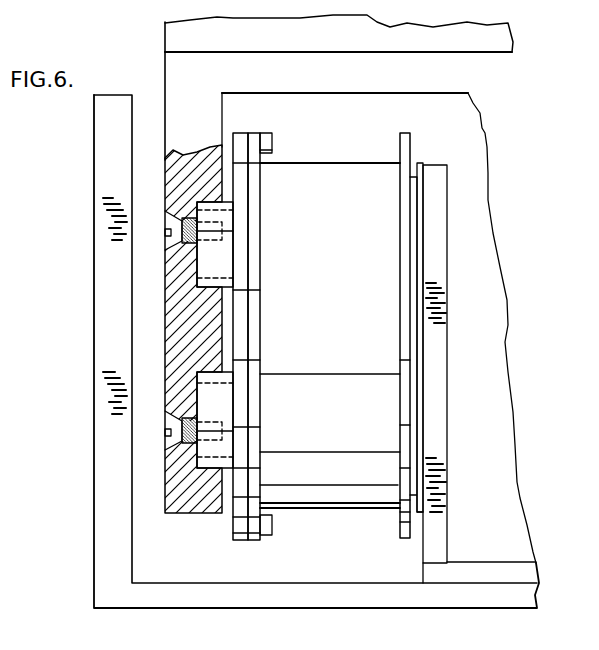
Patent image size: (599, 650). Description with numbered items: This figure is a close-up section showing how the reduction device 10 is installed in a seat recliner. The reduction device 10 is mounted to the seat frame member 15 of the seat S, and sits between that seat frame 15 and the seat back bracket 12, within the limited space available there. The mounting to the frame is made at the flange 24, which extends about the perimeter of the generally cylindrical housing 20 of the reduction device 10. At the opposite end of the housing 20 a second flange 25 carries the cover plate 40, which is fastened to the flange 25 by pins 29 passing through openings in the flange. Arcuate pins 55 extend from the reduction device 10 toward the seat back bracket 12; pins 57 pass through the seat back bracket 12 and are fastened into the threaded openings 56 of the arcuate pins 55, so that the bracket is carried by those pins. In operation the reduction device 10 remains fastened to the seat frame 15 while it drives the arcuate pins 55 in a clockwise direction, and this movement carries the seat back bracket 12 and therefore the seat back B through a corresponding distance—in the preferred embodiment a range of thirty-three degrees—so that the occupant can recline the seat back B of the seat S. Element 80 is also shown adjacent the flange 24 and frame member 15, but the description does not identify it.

The seat back B is at (168, 42).
The seat back bracket 12 is at (175, 97).
The seat S is at (100, 353).
The pins 57 is at (170, 247).
The arcuate pins 55 is at (228, 238).
The threaded opening 56 is at (217, 243).
The cover plate 40 is at (238, 525).
The flange 25 is at (250, 530).
The pins 29 is at (268, 528).
The housing 20 is at (340, 488).
The flange 24 is at (398, 148).
The reduction device 10 is at (400, 495).
The thin plate 80 is at (418, 198).
The seat frame member 15 is at (440, 402).